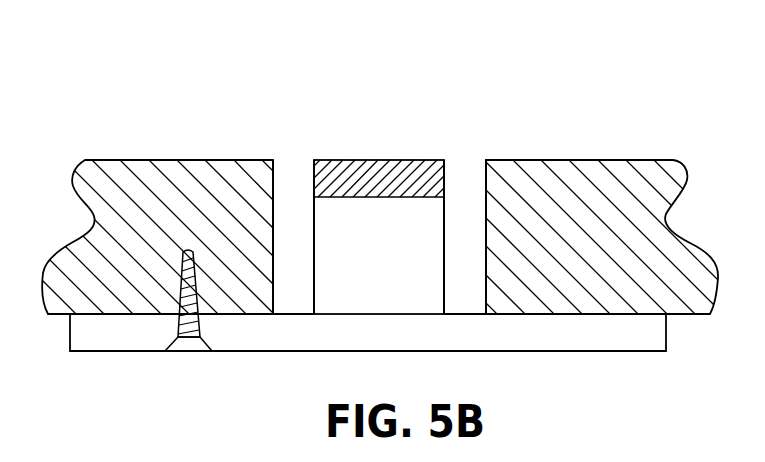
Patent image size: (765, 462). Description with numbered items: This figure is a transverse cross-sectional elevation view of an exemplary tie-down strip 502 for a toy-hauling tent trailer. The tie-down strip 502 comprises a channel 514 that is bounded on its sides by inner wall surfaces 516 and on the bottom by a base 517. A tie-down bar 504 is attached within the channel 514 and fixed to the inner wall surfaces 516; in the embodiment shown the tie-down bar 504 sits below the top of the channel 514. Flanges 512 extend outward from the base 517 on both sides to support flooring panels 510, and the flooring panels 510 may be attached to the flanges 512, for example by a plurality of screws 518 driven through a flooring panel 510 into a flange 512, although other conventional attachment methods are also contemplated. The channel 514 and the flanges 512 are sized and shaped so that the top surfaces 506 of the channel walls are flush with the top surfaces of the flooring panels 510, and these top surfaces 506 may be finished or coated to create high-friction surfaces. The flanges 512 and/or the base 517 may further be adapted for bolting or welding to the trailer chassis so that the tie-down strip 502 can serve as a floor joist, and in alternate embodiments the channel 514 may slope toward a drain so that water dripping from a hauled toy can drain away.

The tie-down strip 502 is at (491, 64).
The tie-down bar 504 is at (381, 160).
The top surfaces of the channel walls 506 is at (288, 150).
The flooring panels 510 is at (150, 160).
The flanges 512 is at (148, 351).
The channel 514 is at (394, 240).
The inner wall surfaces 516 is at (437, 289).
The base 517 is at (375, 351).
The screws 518 is at (200, 351).